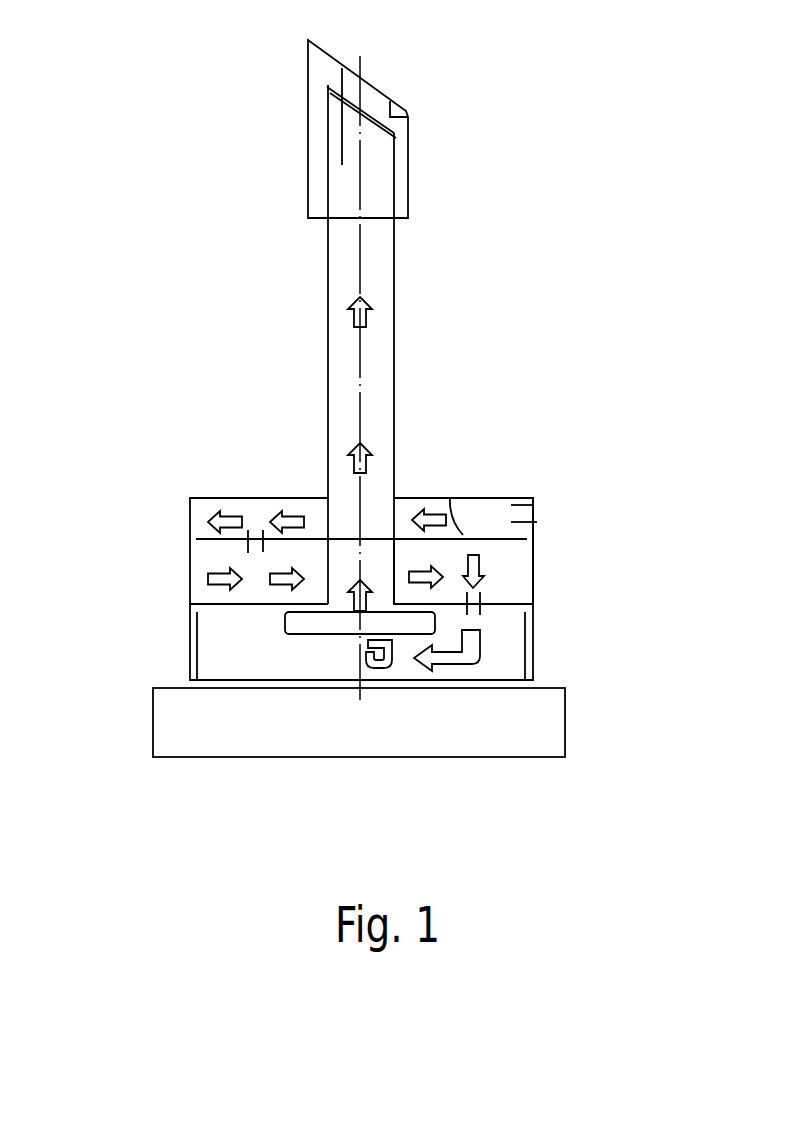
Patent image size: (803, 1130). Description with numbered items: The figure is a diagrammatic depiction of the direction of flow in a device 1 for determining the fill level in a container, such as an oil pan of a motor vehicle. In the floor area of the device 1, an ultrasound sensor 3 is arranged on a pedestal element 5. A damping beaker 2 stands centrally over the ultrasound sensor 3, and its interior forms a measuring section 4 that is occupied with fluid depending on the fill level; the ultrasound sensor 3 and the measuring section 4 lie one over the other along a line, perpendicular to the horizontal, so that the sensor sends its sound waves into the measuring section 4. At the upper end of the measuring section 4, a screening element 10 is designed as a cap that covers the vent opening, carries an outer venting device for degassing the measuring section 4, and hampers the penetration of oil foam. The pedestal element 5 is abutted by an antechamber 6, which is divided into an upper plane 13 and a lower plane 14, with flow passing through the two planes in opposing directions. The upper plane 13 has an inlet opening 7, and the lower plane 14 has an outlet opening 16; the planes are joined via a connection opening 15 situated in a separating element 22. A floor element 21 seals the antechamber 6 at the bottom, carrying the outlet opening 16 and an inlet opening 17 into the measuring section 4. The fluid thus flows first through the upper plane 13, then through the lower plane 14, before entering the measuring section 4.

The device 1 is at (250, 337).
The damping beaker 2 is at (328, 278).
The ultrasound sensor 3 is at (295, 619).
The measuring section 4 is at (376, 267).
The pedestal element 5 is at (153, 728).
The antechamber 6 is at (168, 525).
The inlet opening 7 is at (535, 510).
The screening element 10 is at (308, 80).
The upper plane 13 is at (494, 500).
The lower plane 14 is at (506, 563).
The connection opening 15 is at (248, 552).
The outlet opening 16 is at (478, 612).
The inlet opening 17 is at (378, 597).
The floor element 21 is at (527, 602).
The separating element 22 is at (450, 498).